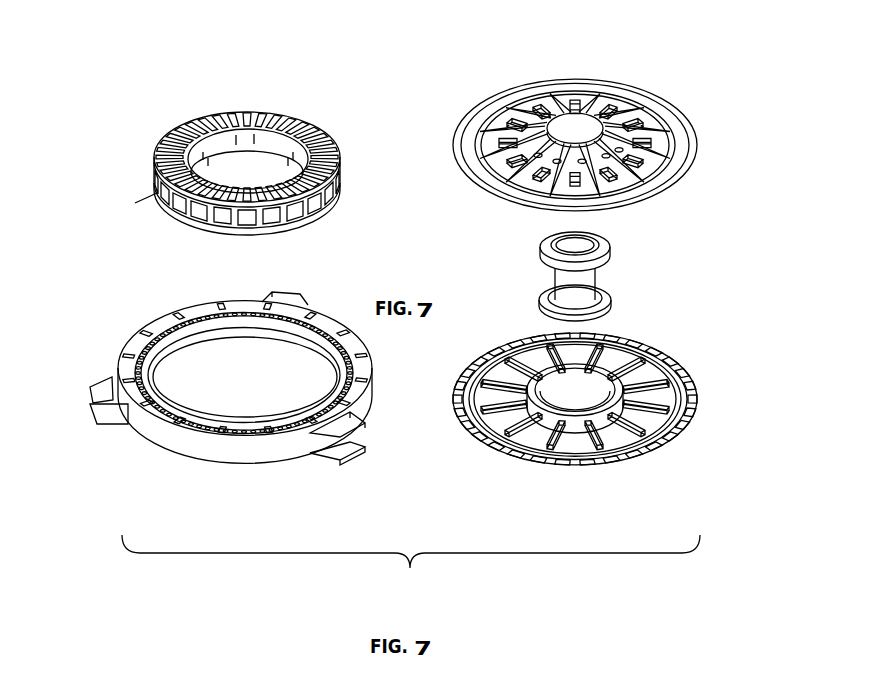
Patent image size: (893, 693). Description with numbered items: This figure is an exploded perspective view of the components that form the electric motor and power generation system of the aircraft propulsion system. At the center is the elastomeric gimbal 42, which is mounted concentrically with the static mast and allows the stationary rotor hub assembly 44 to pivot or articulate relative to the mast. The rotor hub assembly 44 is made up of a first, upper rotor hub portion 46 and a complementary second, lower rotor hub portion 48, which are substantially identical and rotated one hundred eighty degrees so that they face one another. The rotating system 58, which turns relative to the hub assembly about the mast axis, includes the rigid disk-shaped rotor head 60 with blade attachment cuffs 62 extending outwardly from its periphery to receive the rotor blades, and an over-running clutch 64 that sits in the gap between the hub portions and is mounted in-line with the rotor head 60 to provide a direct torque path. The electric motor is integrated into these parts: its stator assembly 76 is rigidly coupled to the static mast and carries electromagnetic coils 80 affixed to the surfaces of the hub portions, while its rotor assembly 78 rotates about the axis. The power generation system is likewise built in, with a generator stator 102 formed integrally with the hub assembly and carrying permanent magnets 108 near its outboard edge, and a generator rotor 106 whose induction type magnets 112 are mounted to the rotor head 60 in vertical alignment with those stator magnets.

The elastomeric gimbal 42 is at (565, 290).
The stationary rotor hub assembly 44 is at (583, 117).
The first, upper rotor hub portion 46 is at (676, 172).
The second, lower rotor hub portion 48 is at (575, 422).
The rotating system 58 is at (231, 136).
The rotor head 60 is at (214, 404).
The blade attachment cuff 62 is at (99, 389).
The over-running clutch 64 is at (237, 142).
The stator assembly 76 is at (619, 119).
The rotor assembly 78 is at (148, 112).
The electromagnetic coils 80 is at (522, 106).
The generator stator 102 is at (610, 422).
The generator rotor 106 is at (209, 404).
The permanent magnets 108 is at (547, 462).
The induction type magnets 112 is at (169, 322).